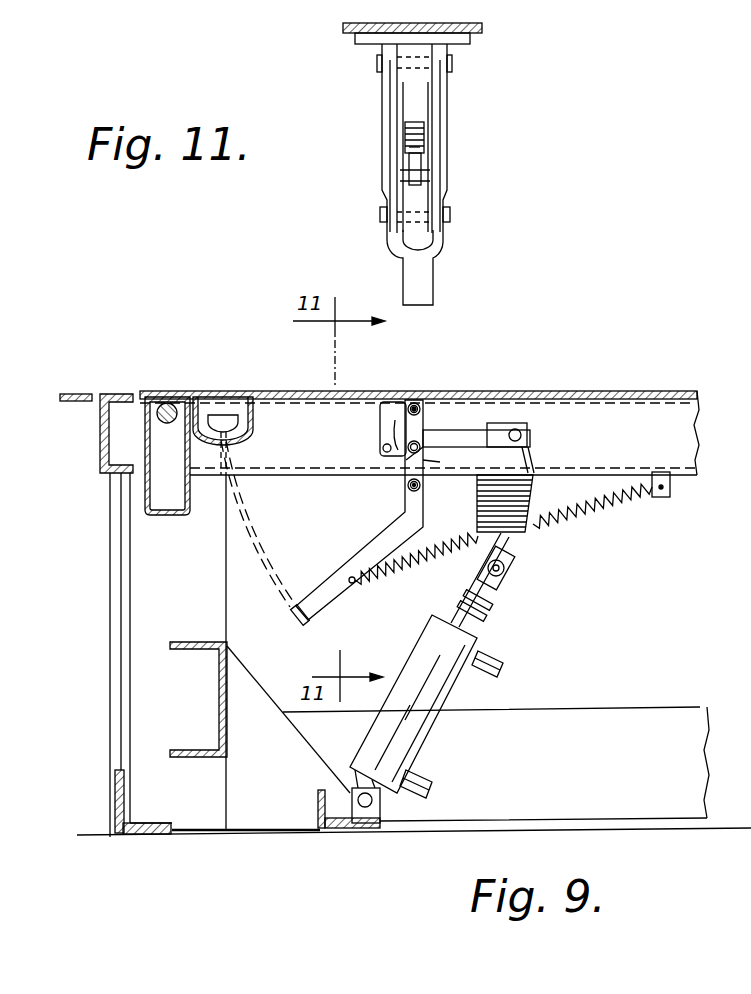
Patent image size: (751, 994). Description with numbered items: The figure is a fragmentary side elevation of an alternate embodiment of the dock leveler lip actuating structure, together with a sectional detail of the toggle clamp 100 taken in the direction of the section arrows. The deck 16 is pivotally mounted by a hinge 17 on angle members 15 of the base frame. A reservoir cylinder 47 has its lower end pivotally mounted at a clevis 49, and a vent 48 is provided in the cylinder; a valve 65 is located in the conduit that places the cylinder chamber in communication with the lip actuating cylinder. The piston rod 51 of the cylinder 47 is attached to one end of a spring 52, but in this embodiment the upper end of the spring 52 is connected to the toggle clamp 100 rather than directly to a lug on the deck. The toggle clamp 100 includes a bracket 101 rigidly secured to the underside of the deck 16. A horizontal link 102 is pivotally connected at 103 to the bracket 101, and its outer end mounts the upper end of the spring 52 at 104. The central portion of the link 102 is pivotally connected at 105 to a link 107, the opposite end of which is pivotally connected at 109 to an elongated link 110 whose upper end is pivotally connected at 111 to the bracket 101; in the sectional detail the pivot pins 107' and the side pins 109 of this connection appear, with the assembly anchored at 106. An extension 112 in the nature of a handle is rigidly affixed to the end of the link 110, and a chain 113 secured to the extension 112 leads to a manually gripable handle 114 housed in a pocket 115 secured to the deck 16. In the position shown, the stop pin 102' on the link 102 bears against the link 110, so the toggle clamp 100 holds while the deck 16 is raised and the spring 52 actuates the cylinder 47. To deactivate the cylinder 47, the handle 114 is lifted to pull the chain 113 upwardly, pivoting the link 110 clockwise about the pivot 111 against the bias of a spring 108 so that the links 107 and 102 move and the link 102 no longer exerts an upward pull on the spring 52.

In FIG. 9, the angle members 15 is at (118, 563).
In FIG. 11, the deck 16 is at (460, 24).
In FIG. 9, the deck 16 is at (672, 390).
In FIG. 9, the hinge 17 is at (167, 403).
In FIG. 9, the reservoir cylinder 47 is at (430, 725).
In FIG. 9, the vent 48 is at (434, 788).
In FIG. 9, the clevis 49 is at (380, 826).
In FIG. 9, the piston rod 51 is at (480, 630).
In FIG. 9, the spring 52 is at (525, 540).
In FIG. 9, the valve 65 is at (488, 672).
In FIG. 9, the toggle clamp 100 is at (358, 487).
In FIG. 11, the bracket 101 is at (414, 107).
In FIG. 9, the bracket 101 is at (398, 408).
In FIG. 11, the horizontal link 102 is at (472, 127).
In FIG. 9, the horizontal link 102 is at (490, 407).
In FIG. 9, the stop pin 102' is at (449, 485).
In FIG. 11, the pivot 103 is at (425, 149).
In FIG. 9, the pivot 103 is at (383, 448).
In FIG. 9, the spring mounting 104 is at (505, 428).
In FIG. 9, the pivot 105 is at (432, 448).
In FIG. 9, the anchor 106 is at (672, 486).
In FIG. 11, the link 107 is at (475, 174).
In FIG. 11, the pin 107' is at (473, 247).
In FIG. 9, the spring 108 is at (630, 516).
In FIG. 11, the pivot 109 is at (383, 213).
In FIG. 9, the pivot 109 is at (414, 490).
In FIG. 11, the elongated link 110 is at (382, 98).
In FIG. 9, the elongated link 110 is at (380, 545).
In FIG. 9, the pivot 111 is at (420, 405).
In FIG. 9, the extension 112 is at (313, 614).
In FIG. 9, the chain 113 is at (245, 557).
In FIG. 9, the handle 114 is at (223, 415).
In FIG. 9, the pocket 115 is at (253, 424).